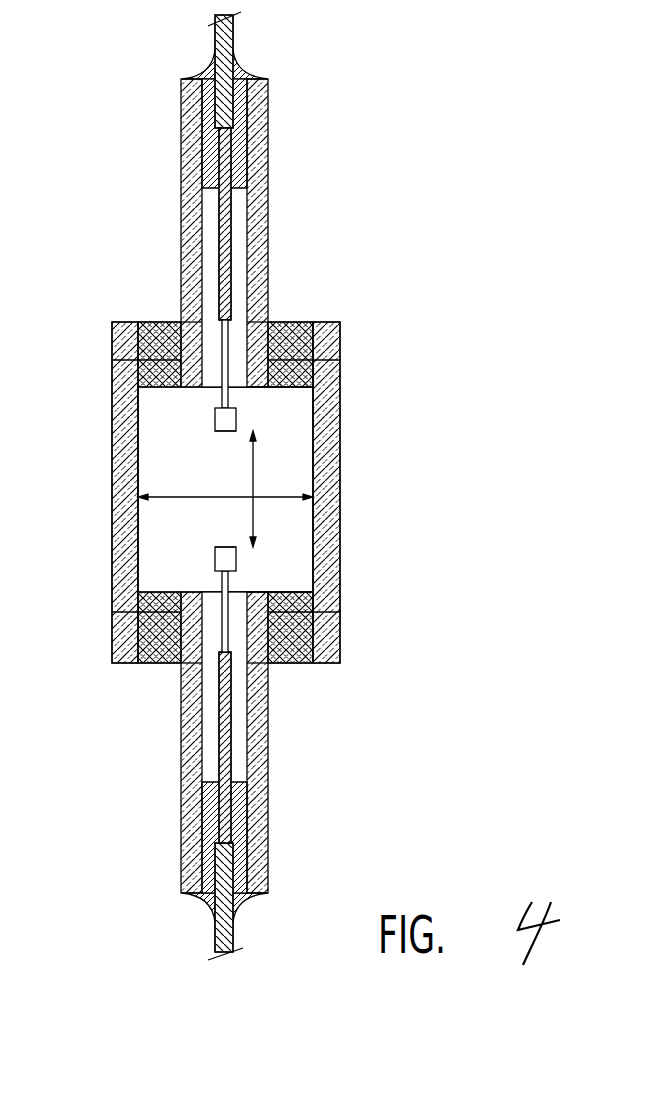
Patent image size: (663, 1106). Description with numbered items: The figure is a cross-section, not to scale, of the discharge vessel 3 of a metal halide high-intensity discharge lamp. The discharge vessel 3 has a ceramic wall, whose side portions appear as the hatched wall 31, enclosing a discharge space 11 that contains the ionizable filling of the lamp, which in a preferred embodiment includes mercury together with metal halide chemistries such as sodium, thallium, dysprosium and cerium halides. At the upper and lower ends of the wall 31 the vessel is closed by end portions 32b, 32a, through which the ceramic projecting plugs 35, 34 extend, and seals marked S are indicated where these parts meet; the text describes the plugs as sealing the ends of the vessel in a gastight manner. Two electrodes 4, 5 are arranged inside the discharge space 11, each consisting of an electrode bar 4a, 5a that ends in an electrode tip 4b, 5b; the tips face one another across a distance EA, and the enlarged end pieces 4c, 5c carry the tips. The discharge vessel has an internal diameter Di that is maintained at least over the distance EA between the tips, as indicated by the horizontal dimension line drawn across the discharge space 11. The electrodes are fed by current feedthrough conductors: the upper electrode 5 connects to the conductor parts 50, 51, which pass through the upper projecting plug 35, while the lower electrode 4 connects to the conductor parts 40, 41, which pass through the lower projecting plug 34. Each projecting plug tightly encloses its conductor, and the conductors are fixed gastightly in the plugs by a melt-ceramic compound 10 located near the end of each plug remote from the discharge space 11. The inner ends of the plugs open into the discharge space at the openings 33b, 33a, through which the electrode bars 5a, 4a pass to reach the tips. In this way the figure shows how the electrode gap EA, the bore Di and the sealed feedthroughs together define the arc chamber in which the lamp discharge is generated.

The discharge vessel 3 is at (378, 502).
The housing wall 31 is at (323, 462).
The discharge space 11 is at (165, 482).
The upper retaining block 32b is at (155, 335).
The lower retaining block 32a is at (152, 641).
The seal S is at (120, 360).
The ceramic projecting plug 35 is at (255, 152).
The ceramic projecting plug 34 is at (262, 766).
The melt-ceramic compound 10 is at (242, 68).
The current feedthrough conductor 50 is at (235, 30).
The current feedthrough conductor 51 is at (231, 222).
The current feedthrough conductor 40 is at (233, 936).
The current feedthrough conductor 41 is at (231, 722).
The electrode 5 is at (261, 371).
The electrode bar 5a is at (222, 337).
The electrode tip 5b is at (209, 443).
The upper fiber end block 5c is at (225, 420).
The electrode 4 is at (263, 604).
The electrode bar 4a is at (224, 640).
The electrode tip 4b is at (210, 533).
The lower fiber end block 4c is at (225, 558).
The upper opening 33b is at (257, 390).
The lower opening 33a is at (257, 592).
The internal diameter Di is at (188, 496).
The distance EA is at (254, 453).